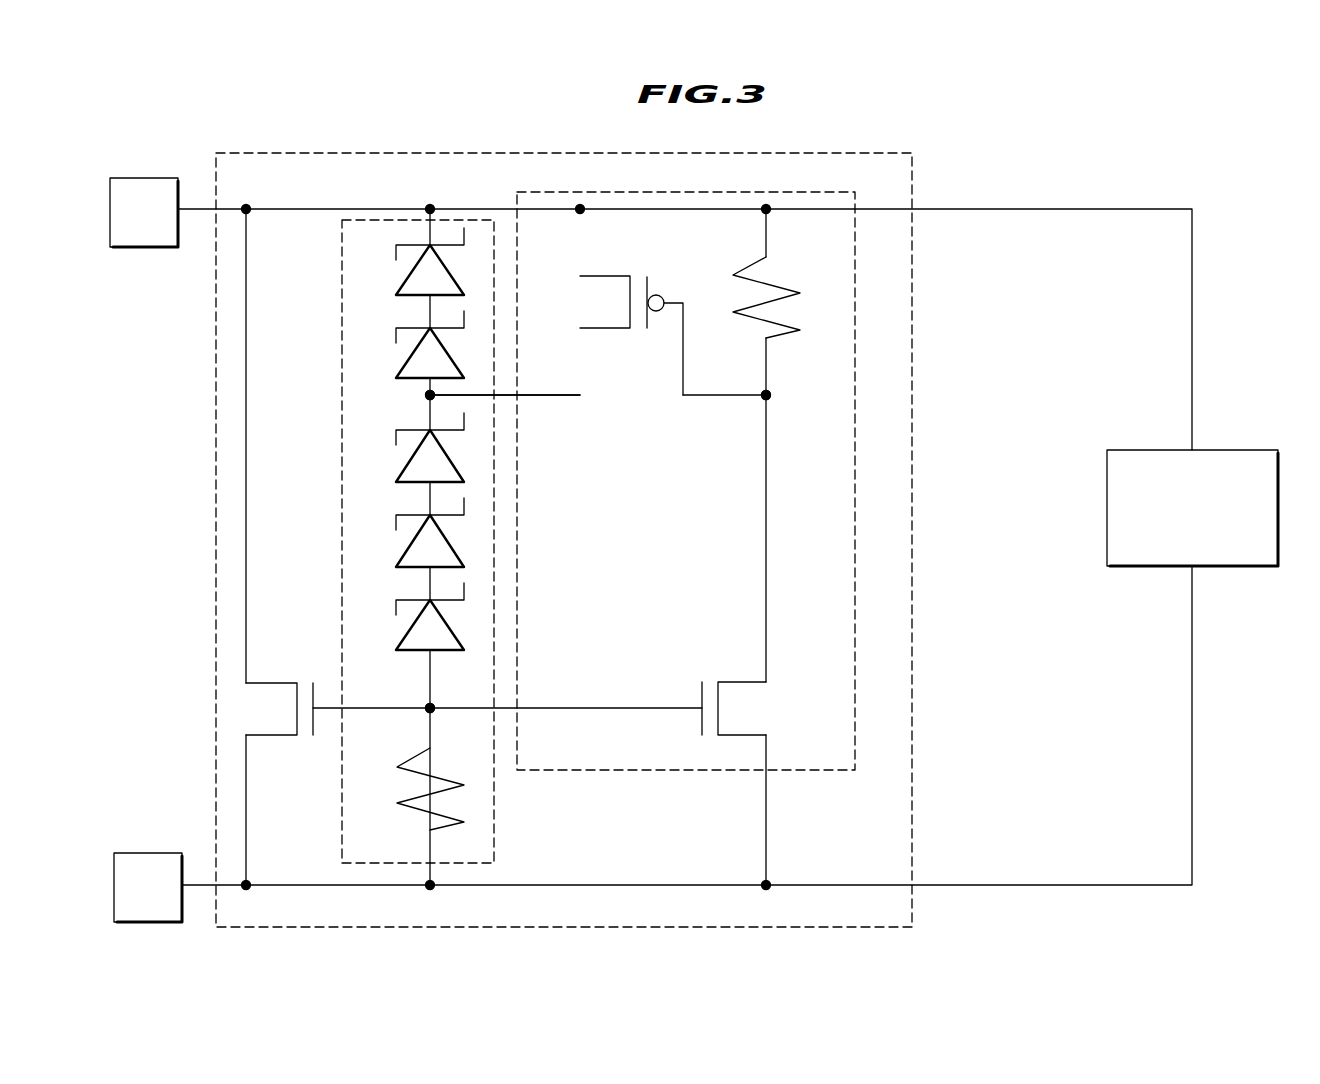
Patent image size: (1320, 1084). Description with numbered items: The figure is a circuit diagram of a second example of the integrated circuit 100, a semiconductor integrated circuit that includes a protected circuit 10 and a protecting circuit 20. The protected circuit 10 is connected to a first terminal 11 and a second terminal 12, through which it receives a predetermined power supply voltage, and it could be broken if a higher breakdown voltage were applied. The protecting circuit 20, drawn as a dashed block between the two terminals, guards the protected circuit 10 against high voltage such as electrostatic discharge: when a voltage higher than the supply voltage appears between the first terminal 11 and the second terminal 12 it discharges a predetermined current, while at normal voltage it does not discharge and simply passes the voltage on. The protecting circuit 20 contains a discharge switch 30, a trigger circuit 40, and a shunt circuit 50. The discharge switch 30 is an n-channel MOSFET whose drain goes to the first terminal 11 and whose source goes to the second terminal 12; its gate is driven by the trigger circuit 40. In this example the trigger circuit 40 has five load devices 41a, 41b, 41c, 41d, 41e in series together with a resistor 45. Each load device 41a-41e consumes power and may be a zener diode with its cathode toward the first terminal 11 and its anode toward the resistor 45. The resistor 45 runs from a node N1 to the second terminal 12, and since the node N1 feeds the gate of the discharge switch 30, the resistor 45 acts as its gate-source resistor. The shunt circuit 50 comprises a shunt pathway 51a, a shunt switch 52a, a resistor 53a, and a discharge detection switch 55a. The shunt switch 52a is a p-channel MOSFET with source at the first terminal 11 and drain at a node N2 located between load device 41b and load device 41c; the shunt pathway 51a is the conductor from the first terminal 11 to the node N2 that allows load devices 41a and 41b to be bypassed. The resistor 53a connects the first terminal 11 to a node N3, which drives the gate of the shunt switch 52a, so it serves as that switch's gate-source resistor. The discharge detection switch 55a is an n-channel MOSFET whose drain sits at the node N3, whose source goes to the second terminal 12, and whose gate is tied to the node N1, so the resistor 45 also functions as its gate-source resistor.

The integrated circuit 100 is at (1175, 136).
The protected circuit 10 is at (1233, 450).
The first terminal 11 is at (150, 248).
The second terminal 12 is at (148, 853).
The protecting circuit 20 is at (912, 285).
The discharge switch 30 is at (270, 683).
The trigger circuit 40 is at (500, 806).
The load device 41a is at (406, 277).
The load device 41b is at (406, 360).
The load device 41c is at (406, 463).
The load device 41d is at (406, 546).
The load device 41e is at (406, 631).
The resistor 45 is at (397, 803).
The shunt circuit 50 is at (693, 770).
The shunt pathway 51a is at (553, 397).
The shunt switch 52a is at (612, 276).
The resistor 53a is at (733, 312).
The discharge detection switch 55a is at (722, 682).
The node N1 is at (427, 705).
The node N2 is at (426, 399).
The node N3 is at (770, 400).